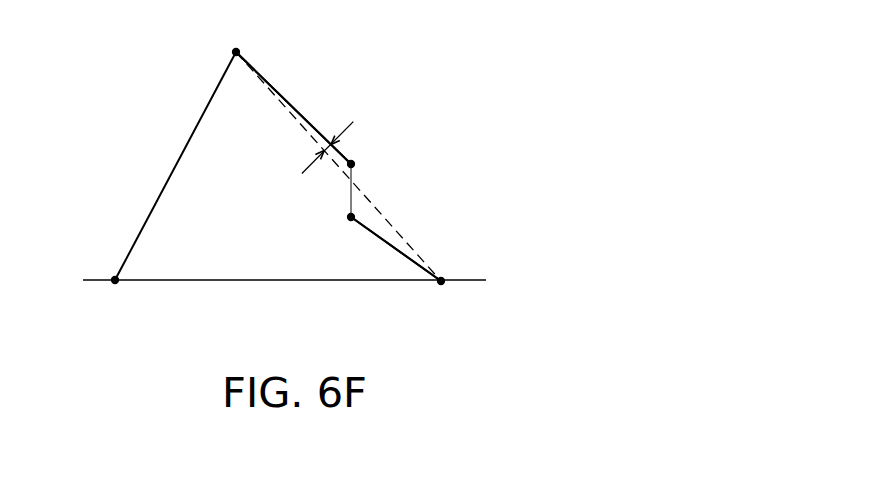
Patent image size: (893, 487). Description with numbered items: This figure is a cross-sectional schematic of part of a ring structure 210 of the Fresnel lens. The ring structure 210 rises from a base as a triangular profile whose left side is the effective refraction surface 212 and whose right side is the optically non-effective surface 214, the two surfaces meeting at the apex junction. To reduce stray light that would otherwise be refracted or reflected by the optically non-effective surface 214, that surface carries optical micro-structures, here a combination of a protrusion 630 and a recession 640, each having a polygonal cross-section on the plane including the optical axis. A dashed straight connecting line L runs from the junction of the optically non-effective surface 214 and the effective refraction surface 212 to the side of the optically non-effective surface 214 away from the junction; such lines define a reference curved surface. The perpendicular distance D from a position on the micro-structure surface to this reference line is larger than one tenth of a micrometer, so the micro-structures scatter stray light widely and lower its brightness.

The ring structure 210 is at (205, 258).
The effective refraction surface 212 is at (158, 198).
The optically non-effective surface 214 is at (284, 97).
The protrusion 630 is at (309, 122).
The recession 640 is at (377, 236).
The perpendicular distance D is at (324, 150).
The straight connecting line L is at (400, 232).